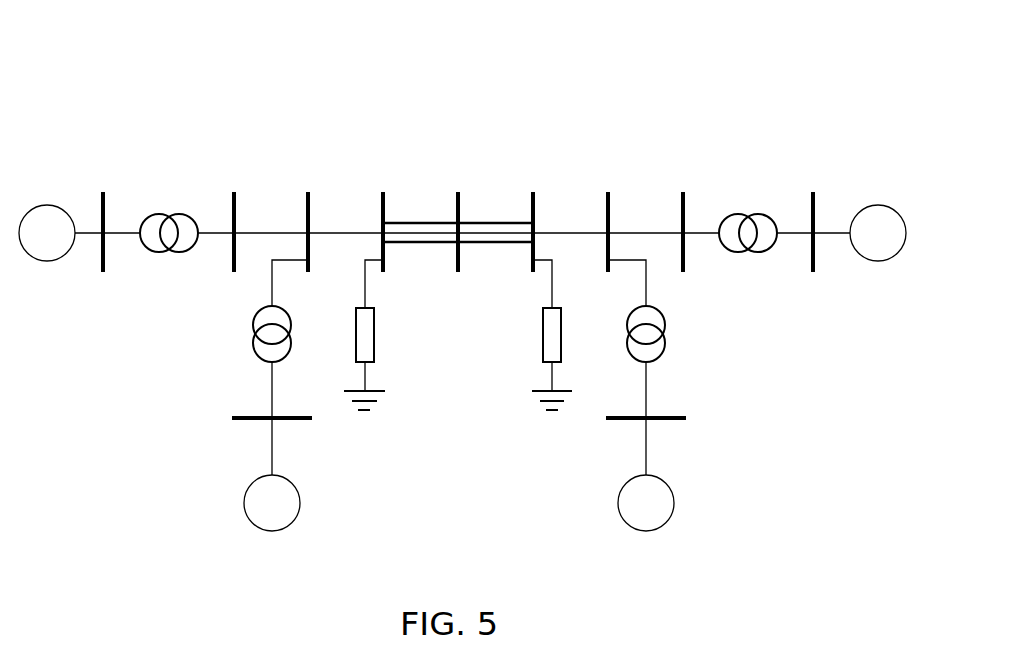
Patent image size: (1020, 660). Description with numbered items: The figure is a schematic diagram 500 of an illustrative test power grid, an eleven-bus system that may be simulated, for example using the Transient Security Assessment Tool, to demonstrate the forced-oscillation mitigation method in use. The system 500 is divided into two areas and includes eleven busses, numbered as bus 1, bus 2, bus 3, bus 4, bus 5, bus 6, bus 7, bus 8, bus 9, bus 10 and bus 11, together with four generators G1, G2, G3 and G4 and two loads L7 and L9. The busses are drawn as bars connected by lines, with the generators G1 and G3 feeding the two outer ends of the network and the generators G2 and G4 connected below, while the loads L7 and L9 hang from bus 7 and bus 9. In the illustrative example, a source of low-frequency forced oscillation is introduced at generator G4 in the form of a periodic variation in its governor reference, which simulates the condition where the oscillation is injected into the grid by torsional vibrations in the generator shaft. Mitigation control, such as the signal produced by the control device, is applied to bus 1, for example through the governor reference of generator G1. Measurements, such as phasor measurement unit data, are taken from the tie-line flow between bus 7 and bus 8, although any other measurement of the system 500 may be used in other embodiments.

The schematic diagram 500 is at (884, 100).
The bus 1 is at (102, 219).
The bus 2 is at (260, 418).
The bus 3 is at (812, 219).
The bus 4 is at (657, 418).
The bus 5 is at (233, 219).
The bus 6 is at (307, 219).
The bus 7 is at (382, 219).
The bus 8 is at (457, 219).
The bus 9 is at (532, 219).
The bus 10 is at (608, 219).
The bus 11 is at (683, 219).
The load L7 is at (355, 351).
The load L9 is at (562, 351).
The generator G1 is at (47, 233).
The generator G2 is at (272, 503).
The generator G3 is at (878, 233).
The generator G4 is at (646, 503).